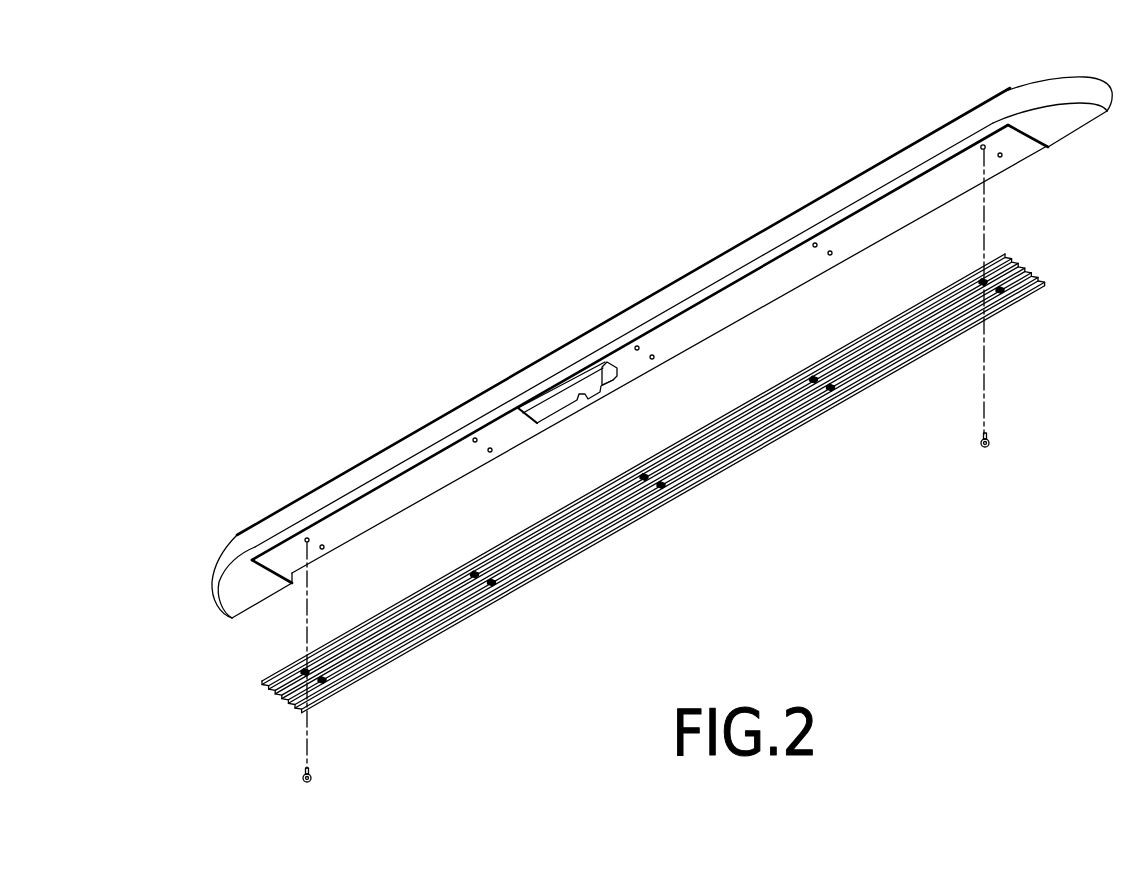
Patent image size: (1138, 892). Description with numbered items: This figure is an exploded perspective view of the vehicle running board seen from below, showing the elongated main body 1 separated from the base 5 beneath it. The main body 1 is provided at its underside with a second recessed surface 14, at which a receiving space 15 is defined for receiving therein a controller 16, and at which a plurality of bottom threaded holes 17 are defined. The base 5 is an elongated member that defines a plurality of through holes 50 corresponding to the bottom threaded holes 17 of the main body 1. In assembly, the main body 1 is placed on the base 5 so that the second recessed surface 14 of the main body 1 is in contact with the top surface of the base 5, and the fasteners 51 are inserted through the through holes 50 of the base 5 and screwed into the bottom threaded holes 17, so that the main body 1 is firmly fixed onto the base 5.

The main body 1 is at (1088, 125).
The second recessed surface 14 is at (902, 205).
The receiving space 15 is at (617, 372).
The controller 16 is at (562, 397).
The bottom threaded holes 17 is at (985, 149).
The base 5 is at (765, 447).
The through holes 50 is at (973, 325).
The fasteners 51 is at (990, 441).